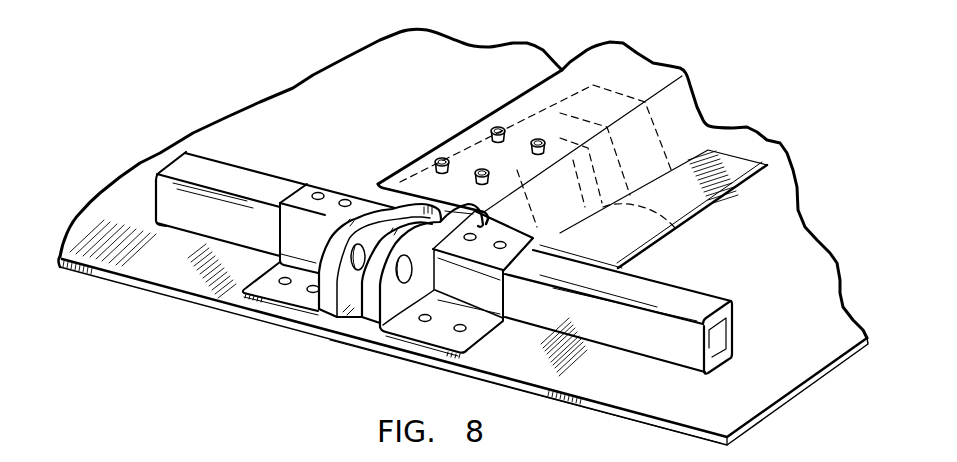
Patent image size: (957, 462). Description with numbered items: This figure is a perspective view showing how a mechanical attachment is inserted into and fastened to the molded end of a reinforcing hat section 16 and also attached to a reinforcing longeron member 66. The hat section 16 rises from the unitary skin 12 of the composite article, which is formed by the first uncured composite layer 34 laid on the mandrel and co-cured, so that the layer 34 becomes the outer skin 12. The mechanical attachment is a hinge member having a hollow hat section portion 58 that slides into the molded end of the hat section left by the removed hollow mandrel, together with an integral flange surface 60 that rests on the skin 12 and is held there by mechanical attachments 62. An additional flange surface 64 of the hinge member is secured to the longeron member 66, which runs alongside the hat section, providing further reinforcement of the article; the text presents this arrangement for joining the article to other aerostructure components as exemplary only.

The unitary skin 12 is at (188, 300).
The reinforcing hat section 16 is at (415, 138).
The first uncured composite layer 34 is at (614, 415).
The hollow hat section portion 58 is at (680, 225).
The integral flange surface 60 is at (484, 340).
The mechanical attachments 62 is at (319, 192).
The additional flange surface 64 is at (295, 182).
The longeron member 66 is at (711, 295).